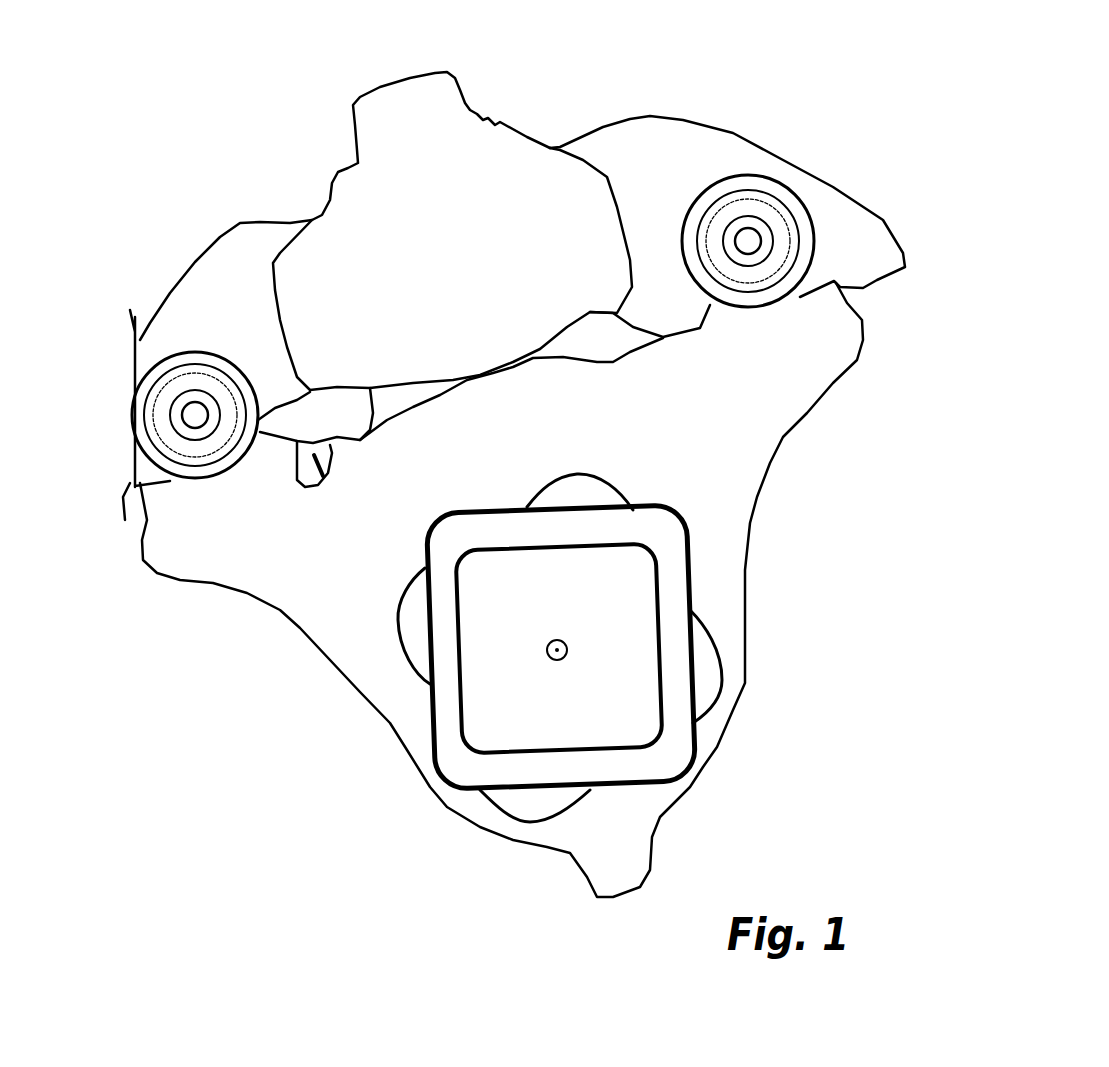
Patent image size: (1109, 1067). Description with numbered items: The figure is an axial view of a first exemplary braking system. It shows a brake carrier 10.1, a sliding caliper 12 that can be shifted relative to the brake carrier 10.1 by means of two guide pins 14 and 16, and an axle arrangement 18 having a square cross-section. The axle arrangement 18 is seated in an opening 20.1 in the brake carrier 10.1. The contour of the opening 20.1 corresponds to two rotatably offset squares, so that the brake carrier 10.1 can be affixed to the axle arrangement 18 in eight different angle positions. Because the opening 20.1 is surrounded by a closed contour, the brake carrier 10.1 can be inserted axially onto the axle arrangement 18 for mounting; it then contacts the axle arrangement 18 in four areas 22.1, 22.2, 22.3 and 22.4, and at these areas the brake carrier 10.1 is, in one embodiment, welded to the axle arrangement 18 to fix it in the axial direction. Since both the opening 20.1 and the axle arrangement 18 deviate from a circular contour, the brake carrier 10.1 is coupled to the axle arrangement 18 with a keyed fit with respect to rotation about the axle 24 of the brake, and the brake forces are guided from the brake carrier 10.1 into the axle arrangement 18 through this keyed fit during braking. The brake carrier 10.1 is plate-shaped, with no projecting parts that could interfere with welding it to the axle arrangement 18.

The brake carrier 10.1 is at (830, 383).
The sliding caliper 12 is at (683, 120).
The guide pin 14 is at (160, 417).
The guide pin 16 is at (777, 200).
The axle arrangement 18 is at (693, 663).
The opening 20.1 is at (525, 800).
The contact area 22.1 is at (433, 522).
The contact area 22.2 is at (673, 517).
The contact area 22.3 is at (433, 762).
The contact area 22.4 is at (680, 760).
The axle 24 is at (572, 637).